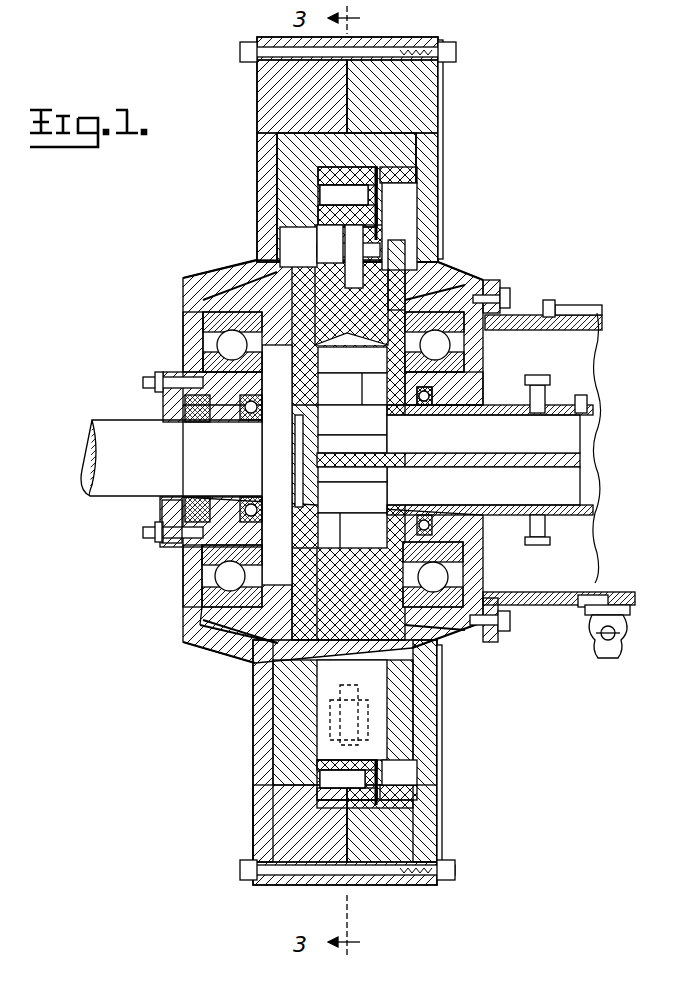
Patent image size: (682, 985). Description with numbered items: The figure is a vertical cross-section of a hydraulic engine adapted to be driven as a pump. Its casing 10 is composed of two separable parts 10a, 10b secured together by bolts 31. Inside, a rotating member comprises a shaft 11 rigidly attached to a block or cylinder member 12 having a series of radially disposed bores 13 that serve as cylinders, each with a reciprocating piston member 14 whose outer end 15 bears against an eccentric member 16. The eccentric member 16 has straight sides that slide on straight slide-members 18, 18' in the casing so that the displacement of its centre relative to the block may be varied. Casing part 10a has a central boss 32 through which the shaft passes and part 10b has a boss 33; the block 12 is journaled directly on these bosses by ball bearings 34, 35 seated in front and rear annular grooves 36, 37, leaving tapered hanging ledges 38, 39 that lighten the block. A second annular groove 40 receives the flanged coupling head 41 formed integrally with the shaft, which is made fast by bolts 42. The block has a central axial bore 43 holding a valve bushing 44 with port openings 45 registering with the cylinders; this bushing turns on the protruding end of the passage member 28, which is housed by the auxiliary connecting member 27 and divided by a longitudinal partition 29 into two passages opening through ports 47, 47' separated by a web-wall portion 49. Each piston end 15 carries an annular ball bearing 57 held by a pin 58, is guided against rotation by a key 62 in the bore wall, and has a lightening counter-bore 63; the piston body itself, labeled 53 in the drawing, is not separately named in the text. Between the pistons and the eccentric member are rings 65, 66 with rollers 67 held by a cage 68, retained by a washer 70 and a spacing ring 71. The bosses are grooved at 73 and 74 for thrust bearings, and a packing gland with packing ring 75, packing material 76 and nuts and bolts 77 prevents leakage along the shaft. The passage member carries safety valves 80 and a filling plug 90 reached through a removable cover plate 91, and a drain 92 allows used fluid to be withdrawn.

The casing 10 is at (480, 169).
The casing part 10a is at (265, 912).
The casing part 10b is at (443, 72).
The shaft 11 is at (115, 430).
The block or cylinder member 12 is at (228, 300).
The bore 13 is at (292, 252).
The piston member 14 is at (332, 236).
The outer end of piston 15 is at (320, 215).
The eccentric member 16 is at (405, 150).
The slide-member 18 is at (383, 173).
The slide-member 18' is at (381, 737).
The auxiliary connecting member 27 is at (622, 605).
The passage member 28 is at (575, 517).
The longitudinal partition 29 is at (565, 460).
The bolt 31 is at (410, 52).
The boss 32 is at (252, 406).
The boss 33 is at (470, 415).
The anti-friction bearing 34 is at (228, 372).
The anti-friction bearing 35 is at (445, 372).
The front annular groove 36 is at (225, 322).
The rear annular groove 37 is at (445, 300).
The hanging ledge 38 is at (202, 612).
The hanging ledge 39 is at (480, 640).
The second annular groove 40 is at (242, 650).
The flanged coupling head 41 is at (215, 545).
The bolt 42 is at (352, 389).
The central axial bore 43 is at (387, 540).
The valve bushing 44 is at (420, 412).
The port opening 45 is at (355, 400).
The port 47 is at (352, 420).
The port 47' is at (352, 497).
The web-wall portion 49 is at (360, 478).
The flange 53 is at (295, 447).
The annular ball bearing 57 is at (345, 252).
The pin 58 is at (378, 240).
The key or pin 62 is at (398, 270).
The counter-bore 63 is at (348, 432).
The ring 65 is at (330, 165).
The ring 66 is at (318, 200).
The roller 67 is at (318, 178).
The cage 68 is at (325, 775).
The washer 70 is at (405, 200).
The spacing ring 71 is at (410, 175).
The groove 73 is at (205, 380).
The groove 74 is at (445, 395).
The packing ring 75 is at (180, 380).
The packing material 76 is at (175, 510).
The nuts and bolts 77 is at (145, 533).
The safety valve 80 is at (540, 385).
The plug 90 is at (588, 400).
The removable cover plate 91 is at (585, 315).
The drain 92 is at (618, 658).